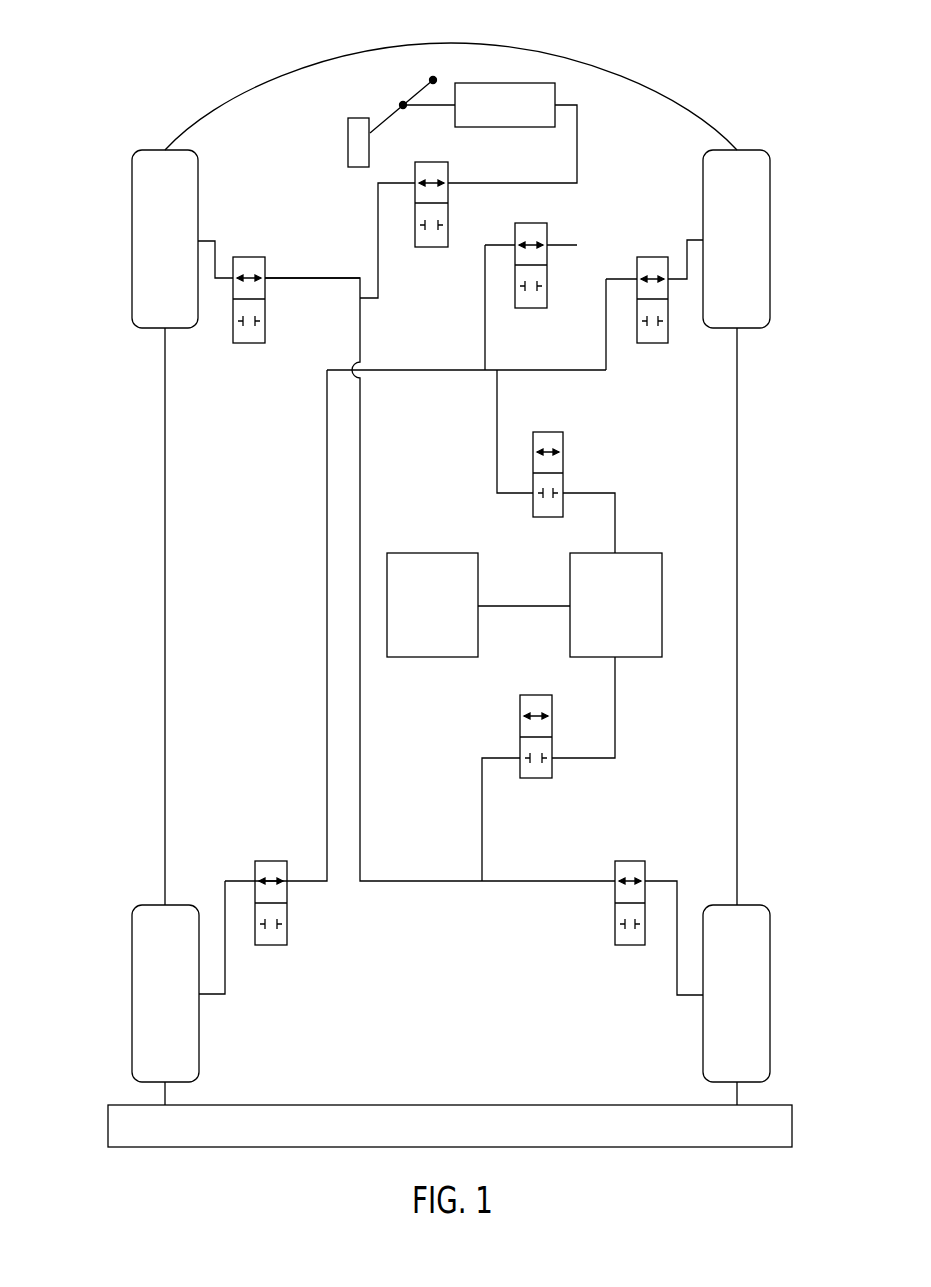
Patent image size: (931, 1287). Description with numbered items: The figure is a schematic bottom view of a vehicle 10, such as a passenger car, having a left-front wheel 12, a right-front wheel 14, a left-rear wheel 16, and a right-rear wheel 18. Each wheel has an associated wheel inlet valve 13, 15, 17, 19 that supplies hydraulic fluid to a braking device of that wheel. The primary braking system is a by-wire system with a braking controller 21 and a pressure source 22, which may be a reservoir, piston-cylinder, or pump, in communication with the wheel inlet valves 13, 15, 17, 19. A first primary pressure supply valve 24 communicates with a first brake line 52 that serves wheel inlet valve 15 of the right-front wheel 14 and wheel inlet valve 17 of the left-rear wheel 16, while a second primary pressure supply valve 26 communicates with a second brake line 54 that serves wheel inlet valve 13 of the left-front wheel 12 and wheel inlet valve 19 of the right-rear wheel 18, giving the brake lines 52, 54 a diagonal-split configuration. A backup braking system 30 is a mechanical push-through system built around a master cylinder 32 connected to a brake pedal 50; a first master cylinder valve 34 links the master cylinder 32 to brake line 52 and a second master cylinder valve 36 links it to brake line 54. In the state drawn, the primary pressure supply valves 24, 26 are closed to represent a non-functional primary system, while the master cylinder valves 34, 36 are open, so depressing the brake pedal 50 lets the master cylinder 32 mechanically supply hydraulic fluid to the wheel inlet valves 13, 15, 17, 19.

The vehicle 10 is at (118, 60).
The left-front wheel 12 is at (132, 205).
The wheel inlet valve 13 is at (247, 257).
The right-front wheel 14 is at (770, 204).
The wheel inlet valve 15 is at (655, 257).
The left-rear wheel 16 is at (132, 990).
The wheel inlet valve 17 is at (270, 861).
The right-rear wheel 18 is at (770, 980).
The wheel inlet valve 19 is at (630, 861).
The braking controller 21 is at (432, 605).
The pressure source 22 is at (616, 605).
The first primary pressure supply valve 24 is at (553, 432).
The second primary pressure supply valve 26 is at (533, 778).
The backup braking system 30 is at (392, 95).
The master cylinder 32 is at (505, 105).
The first master cylinder valve 34 is at (547, 300).
The second master cylinder valve 36 is at (428, 247).
The brake pedal 50 is at (342, 140).
The first brake line 52 is at (327, 557).
The second brake line 54 is at (313, 278).